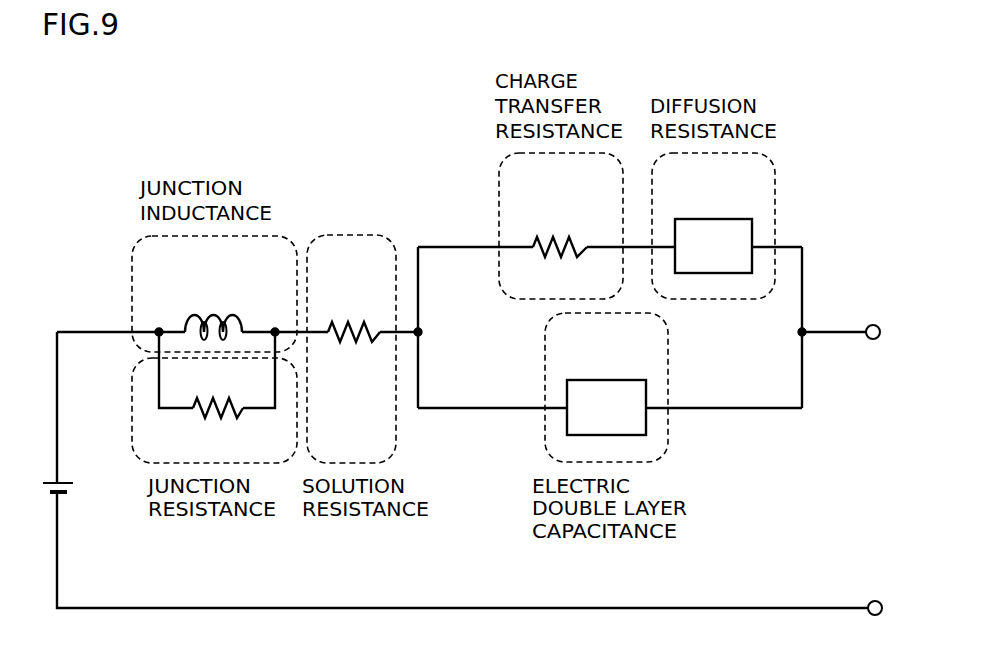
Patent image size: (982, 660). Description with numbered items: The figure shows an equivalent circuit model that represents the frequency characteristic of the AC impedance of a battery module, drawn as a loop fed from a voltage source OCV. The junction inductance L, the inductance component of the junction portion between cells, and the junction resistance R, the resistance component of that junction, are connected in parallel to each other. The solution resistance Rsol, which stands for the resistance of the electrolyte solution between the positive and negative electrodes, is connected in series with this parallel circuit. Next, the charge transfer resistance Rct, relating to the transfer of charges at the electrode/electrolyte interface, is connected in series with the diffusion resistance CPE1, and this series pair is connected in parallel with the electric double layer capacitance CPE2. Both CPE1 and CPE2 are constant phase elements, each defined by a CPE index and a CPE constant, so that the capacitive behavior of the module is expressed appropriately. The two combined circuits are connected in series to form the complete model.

The open circuit voltage source OCV is at (86, 488).
The junction inductance L is at (213, 314).
The junction resistance R is at (218, 395).
The solution resistance Rsol is at (354, 319).
The charge transfer resistance Rct is at (560, 235).
The diffusion resistance CPE1 is at (713, 231).
The electric double layer capacitance CPE2 is at (606, 392).